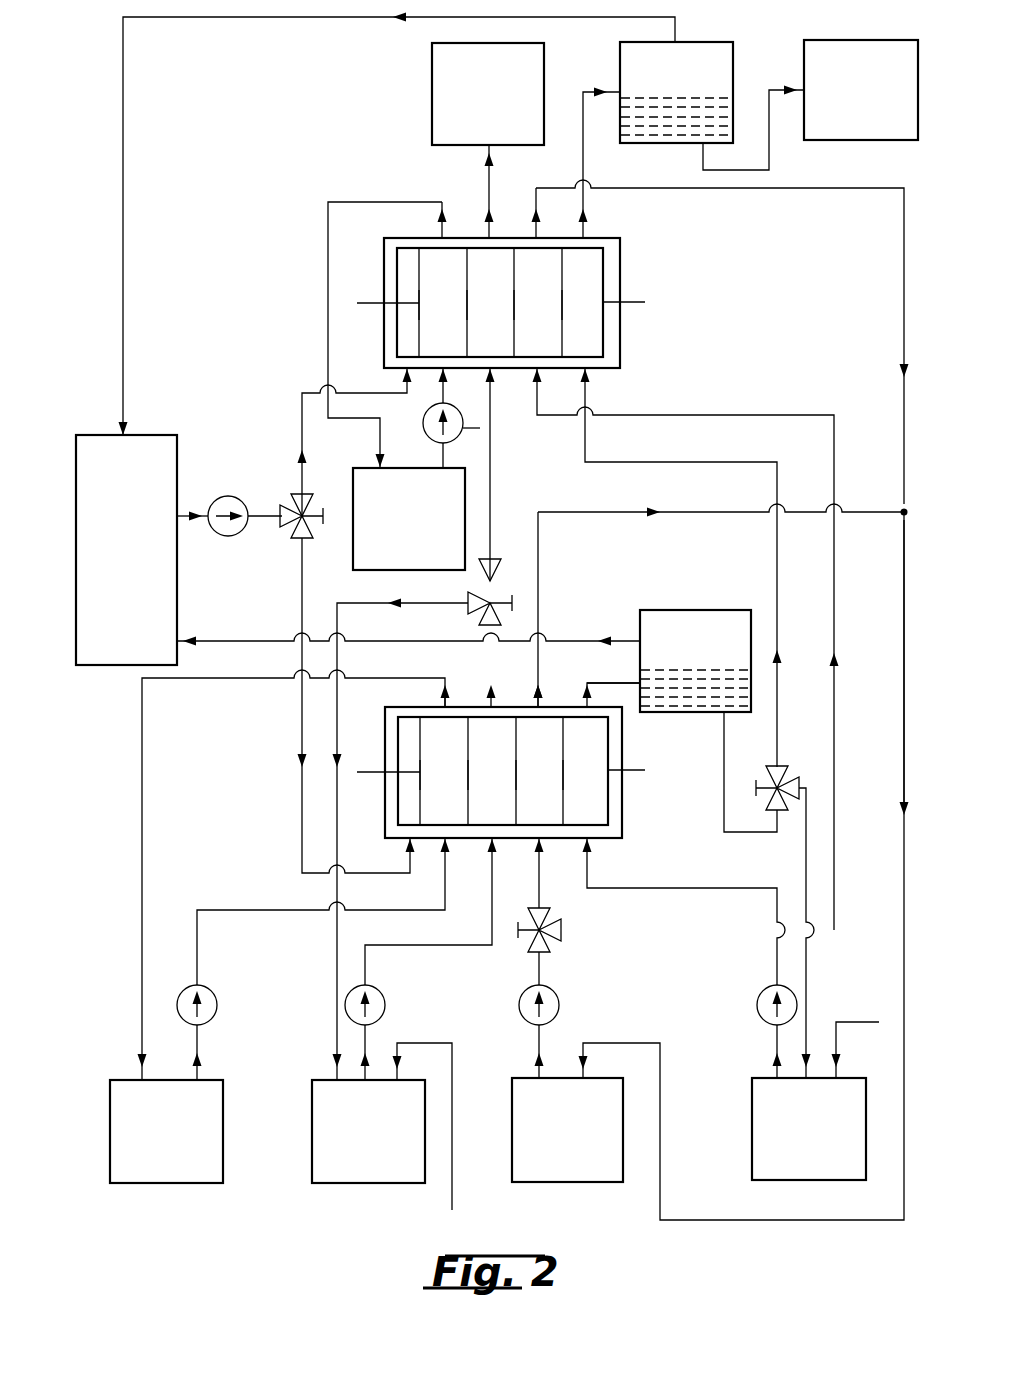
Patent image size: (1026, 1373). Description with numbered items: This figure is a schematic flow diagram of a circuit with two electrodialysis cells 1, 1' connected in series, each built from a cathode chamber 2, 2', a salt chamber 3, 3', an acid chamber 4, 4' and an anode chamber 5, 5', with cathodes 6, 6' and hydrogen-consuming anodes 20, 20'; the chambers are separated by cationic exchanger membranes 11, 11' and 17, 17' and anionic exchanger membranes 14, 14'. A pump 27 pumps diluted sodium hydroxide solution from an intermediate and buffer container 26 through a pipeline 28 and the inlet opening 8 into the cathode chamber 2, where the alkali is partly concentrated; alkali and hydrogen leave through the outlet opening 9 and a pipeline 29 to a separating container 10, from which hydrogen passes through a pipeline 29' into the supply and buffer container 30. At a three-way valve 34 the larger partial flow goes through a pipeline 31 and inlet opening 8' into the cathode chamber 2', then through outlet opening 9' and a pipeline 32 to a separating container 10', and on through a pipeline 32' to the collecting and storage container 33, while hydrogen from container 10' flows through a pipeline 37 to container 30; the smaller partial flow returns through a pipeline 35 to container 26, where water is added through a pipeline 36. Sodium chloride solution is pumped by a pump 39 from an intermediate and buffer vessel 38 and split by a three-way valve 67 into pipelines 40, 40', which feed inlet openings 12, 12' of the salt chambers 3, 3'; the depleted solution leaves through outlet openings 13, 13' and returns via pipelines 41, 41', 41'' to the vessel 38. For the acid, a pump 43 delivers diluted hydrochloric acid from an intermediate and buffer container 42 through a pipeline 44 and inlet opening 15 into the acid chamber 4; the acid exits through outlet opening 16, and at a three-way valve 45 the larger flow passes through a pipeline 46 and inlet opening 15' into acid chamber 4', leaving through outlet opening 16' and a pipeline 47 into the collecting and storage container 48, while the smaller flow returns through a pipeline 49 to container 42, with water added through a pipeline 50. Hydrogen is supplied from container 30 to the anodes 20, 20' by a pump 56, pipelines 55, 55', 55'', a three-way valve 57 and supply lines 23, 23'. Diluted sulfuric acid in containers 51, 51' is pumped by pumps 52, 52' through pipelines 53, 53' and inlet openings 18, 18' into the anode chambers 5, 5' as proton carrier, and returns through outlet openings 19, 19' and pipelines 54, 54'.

The electrodialysis cell 1 is at (541, 775).
The electrodialysis cell 1' is at (541, 306).
The cathode chamber 2 is at (581, 771).
The salt chamber 3 is at (534, 771).
The acid chamber 4 is at (486, 771).
The anode chamber 5 is at (438, 771).
The cathode chamber 2' is at (583, 302).
The salt chamber 3' is at (535, 302).
The acid chamber 4' is at (487, 302).
The anode chamber 5' is at (439, 302).
The cathode 6 is at (517, 771).
The cathode 6' is at (519, 302).
The inlet opening 8 is at (599, 857).
The outlet opening 9 is at (621, 712).
The inlet opening 8' is at (601, 388).
The outlet opening 9' is at (598, 219).
The separating container 10 is at (695, 661).
The separating container 10' is at (676, 92).
The cationic exchanger membrane 11 is at (583, 759).
The inlet opening 12 is at (558, 857).
The outlet opening 13 is at (557, 691).
The anionic exchanger membrane 14 is at (536, 759).
The inlet opening 15 is at (511, 857).
The outlet opening 16 is at (510, 691).
The cationic exchanger membrane 17 is at (489, 759).
The inlet opening 18 is at (463, 857).
The outlet opening 19 is at (463, 691).
The hydrogen-consuming anode 20 is at (440, 759).
The cationic exchanger membrane 11' is at (586, 289).
The inlet opening 12' is at (560, 388).
The outlet opening 13' is at (558, 213).
The anionic exchanger membrane 14' is at (538, 289).
The inlet opening 15' is at (513, 388).
The outlet opening 16' is at (510, 220).
The cationic exchanger membrane 17' is at (491, 289).
The inlet opening 18' is at (466, 388).
The outlet opening 19' is at (463, 220).
The hydrogen-consuming anode 20' is at (443, 289).
The supply line 23 is at (384, 823).
The supply line 23' is at (383, 351).
The intermediate and buffer container 26 is at (827, 1153).
The pump 27 is at (764, 1007).
The pipeline 28 is at (728, 888).
The pipeline 29 is at (613, 665).
The pipeline 29' is at (408, 617).
The supply and buffer container for hydrogen 30 is at (145, 565).
The pipeline 31 is at (714, 459).
The pipeline 32 is at (586, 129).
The pipeline 32' is at (766, 131).
The collecting and storage container 33 is at (880, 105).
The three-way valve 34 is at (782, 772).
The pipeline 35 is at (806, 864).
The pipeline 36 is at (850, 1022).
The pipeline 37 is at (283, 21).
The intermediate and buffer vessel 38 is at (585, 1153).
The pump 39 is at (559, 1008).
The pipeline 40 is at (568, 887).
The pipeline 40' is at (718, 648).
The pipeline 41 is at (721, 605).
The pipeline 41' is at (722, 700).
The pipeline 41'' is at (881, 658).
The intermediate and buffer container 42 is at (386, 1153).
The pump 43 is at (385, 1005).
The pipeline 44 is at (482, 946).
The three-way valve 45 is at (490, 582).
The pipeline 46 is at (492, 490).
The pipeline 47 is at (489, 171).
The collecting and storage container 48 is at (506, 110).
The pipeline 49 is at (337, 733).
The pipeline 50 is at (453, 1062).
The container 51 is at (166, 1131).
The container 51' is at (409, 519).
The pump 52 is at (226, 1032).
The pump 52' is at (501, 441).
The pipeline 53 is at (321, 919).
The pipeline 53' is at (429, 435).
The pipeline 54 is at (292, 863).
The pipeline 54' is at (382, 307).
The pipeline 55 is at (201, 491).
The pipeline 55' is at (327, 442).
The pipeline 55'' is at (336, 721).
The pump 56 is at (238, 536).
The three-way valve 57 is at (308, 539).
The three-way valve 67 is at (550, 946).